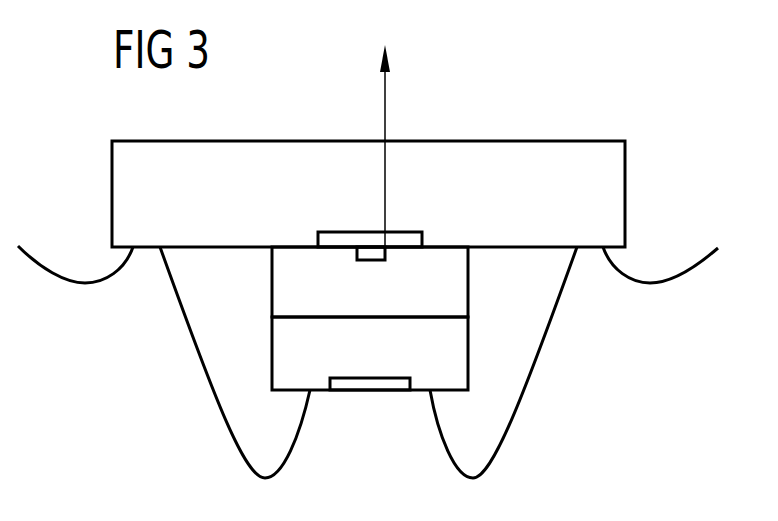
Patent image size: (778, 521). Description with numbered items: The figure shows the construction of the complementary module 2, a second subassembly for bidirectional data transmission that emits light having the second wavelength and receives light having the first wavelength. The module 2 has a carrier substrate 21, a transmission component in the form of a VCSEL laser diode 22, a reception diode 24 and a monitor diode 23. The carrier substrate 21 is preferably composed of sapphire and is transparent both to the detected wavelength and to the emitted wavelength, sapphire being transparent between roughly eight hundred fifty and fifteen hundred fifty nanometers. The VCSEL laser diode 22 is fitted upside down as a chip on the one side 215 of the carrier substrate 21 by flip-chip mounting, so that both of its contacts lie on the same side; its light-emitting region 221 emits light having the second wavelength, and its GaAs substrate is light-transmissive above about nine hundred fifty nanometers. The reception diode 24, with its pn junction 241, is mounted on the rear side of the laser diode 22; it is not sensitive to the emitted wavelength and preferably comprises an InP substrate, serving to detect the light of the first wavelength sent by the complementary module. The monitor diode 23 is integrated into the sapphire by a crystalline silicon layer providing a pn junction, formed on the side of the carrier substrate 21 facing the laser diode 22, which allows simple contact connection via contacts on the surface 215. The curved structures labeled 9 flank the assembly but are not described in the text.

The complementary module 2 is at (528, 100).
The carrier substrate 21 is at (615, 192).
The side of the carrier substrate 215 is at (592, 250).
The VCSEL laser diode 22 is at (458, 283).
The light-emitting region 221 is at (373, 255).
The monitor diode 23 is at (342, 240).
The reception diode 24 is at (458, 348).
The pn junction 241 is at (367, 392).
The reflector / housing wall 9 is at (528, 398).